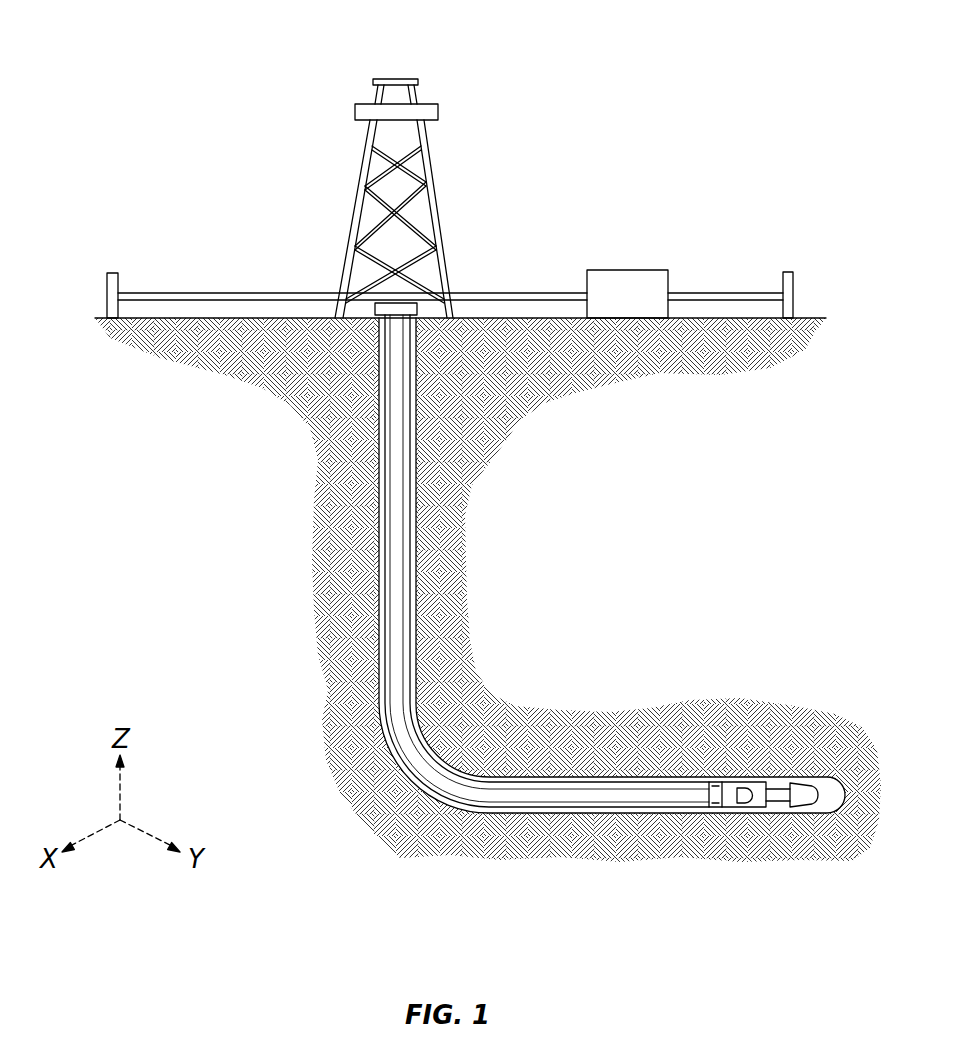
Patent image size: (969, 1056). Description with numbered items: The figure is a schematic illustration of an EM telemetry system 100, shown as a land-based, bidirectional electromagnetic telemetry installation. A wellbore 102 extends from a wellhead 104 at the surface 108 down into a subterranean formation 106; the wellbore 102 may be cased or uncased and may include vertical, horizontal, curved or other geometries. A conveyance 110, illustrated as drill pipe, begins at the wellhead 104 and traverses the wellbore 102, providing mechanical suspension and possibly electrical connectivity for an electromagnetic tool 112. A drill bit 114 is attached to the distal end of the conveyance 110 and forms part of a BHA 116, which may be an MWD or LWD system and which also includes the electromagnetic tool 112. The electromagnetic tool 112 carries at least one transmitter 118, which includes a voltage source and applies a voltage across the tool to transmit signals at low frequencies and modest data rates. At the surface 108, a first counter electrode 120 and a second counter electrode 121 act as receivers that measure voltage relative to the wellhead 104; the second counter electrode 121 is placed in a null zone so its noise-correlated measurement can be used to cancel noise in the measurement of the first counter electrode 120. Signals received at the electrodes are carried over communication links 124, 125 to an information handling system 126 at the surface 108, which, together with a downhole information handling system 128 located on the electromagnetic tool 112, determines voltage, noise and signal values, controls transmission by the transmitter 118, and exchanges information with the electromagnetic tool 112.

The EM telemetry system 100 is at (117, 138).
The wellbore 102 is at (388, 583).
The wellhead 104 is at (373, 308).
The subterranean formation 106 is at (612, 556).
The surface 108 is at (503, 318).
The conveyance 110 is at (376, 441).
The electromagnetic tool 112 is at (730, 808).
The drill bit 114 is at (812, 790).
The BHA 116 is at (812, 830).
The transmitter 118 is at (745, 797).
The first counter electrode 120 is at (790, 272).
The second counter electrode 121 is at (112, 273).
The communication link 124 is at (690, 293).
The communication link 125 is at (540, 293).
The information handling system 126 is at (650, 306).
The downhole information handling system 128 is at (718, 782).